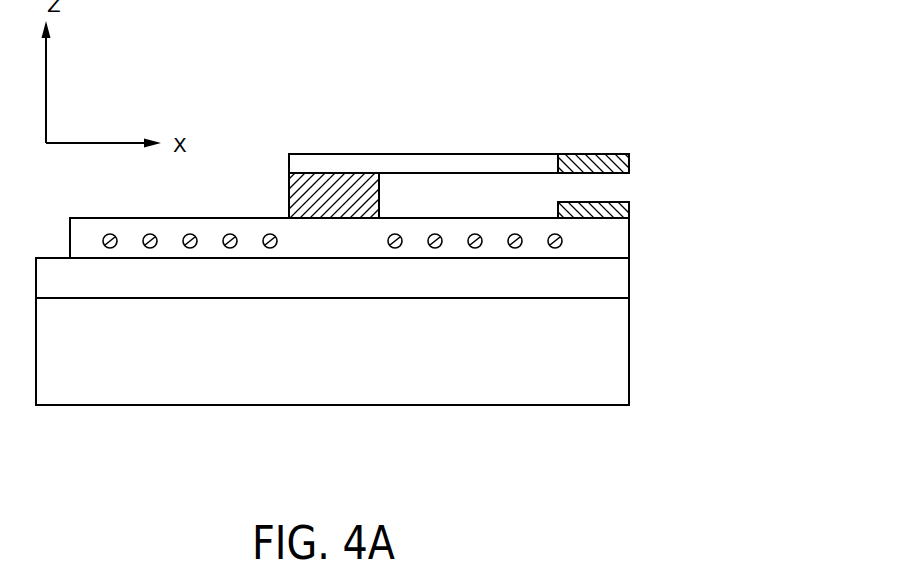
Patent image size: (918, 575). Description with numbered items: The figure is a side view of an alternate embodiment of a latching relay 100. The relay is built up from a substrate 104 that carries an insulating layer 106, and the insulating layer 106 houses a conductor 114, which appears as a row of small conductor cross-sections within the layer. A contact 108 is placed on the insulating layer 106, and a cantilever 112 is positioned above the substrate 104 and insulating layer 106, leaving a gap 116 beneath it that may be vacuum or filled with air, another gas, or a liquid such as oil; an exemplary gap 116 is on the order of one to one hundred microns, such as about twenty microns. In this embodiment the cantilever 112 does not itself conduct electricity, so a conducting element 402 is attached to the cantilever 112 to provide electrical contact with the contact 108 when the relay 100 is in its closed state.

The latching relay 100 is at (533, 78).
The substrate 104 is at (610, 294).
The insulating layer 106 is at (631, 243).
The contact 108 is at (631, 207).
The cantilever 112 is at (423, 163).
The conductor 114 is at (233, 233).
The gap 116 is at (643, 186).
The conducting element 402 is at (632, 162).